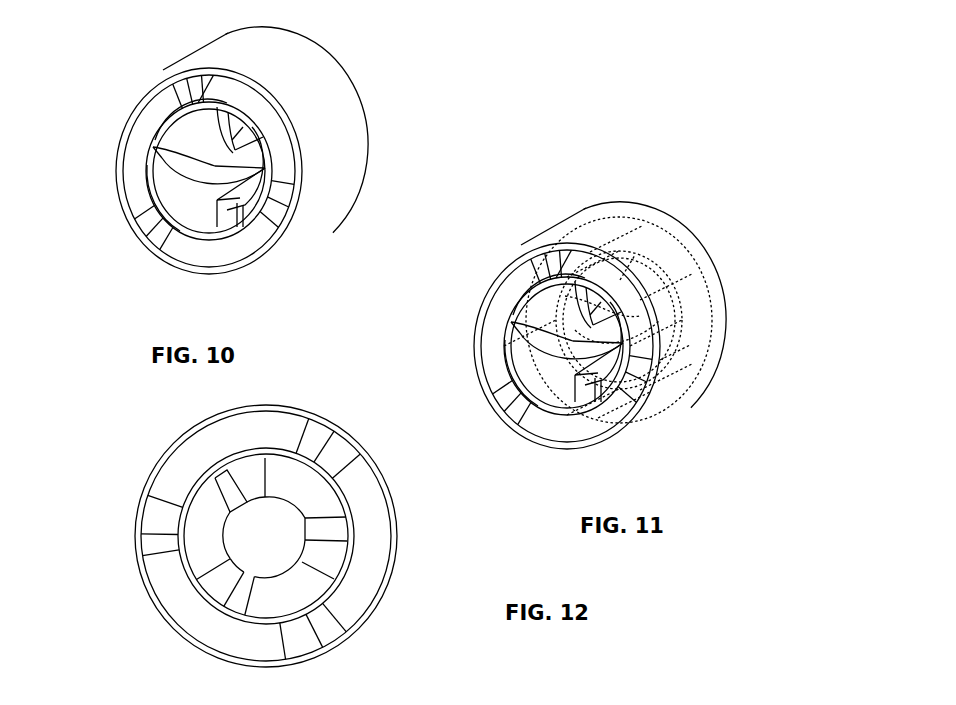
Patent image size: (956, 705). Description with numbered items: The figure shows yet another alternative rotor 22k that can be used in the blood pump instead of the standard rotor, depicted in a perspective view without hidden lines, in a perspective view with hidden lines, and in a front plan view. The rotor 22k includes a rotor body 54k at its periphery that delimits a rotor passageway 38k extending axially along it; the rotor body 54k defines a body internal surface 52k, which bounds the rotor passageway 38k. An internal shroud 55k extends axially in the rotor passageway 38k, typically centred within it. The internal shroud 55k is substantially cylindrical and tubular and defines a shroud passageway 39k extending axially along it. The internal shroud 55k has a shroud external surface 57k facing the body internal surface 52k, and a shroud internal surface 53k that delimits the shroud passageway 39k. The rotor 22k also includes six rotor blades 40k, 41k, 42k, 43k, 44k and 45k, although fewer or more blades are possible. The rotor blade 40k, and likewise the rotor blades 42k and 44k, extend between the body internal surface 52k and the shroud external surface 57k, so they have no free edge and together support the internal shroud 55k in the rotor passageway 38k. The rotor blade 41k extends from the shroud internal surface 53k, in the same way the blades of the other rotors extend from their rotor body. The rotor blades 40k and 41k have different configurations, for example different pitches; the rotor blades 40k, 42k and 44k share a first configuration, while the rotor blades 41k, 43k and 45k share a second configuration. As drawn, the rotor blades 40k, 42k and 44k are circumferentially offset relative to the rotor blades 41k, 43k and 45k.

In FIG. 10, the rotor 22k is at (392, 85).
In FIG. 11, the rotor 22k is at (750, 260).
In FIG. 12, the rotor 22k is at (308, 388).
In FIG. 10, the rotor passageway 38k is at (128, 117).
In FIG. 11, the rotor passageway 38k is at (488, 293).
In FIG. 10, the shroud passageway 39k is at (167, 200).
In FIG. 11, the shroud passageway 39k is at (523, 373).
In FIG. 10, the rotor blade 40k is at (168, 235).
In FIG. 11, the rotor blade 40k is at (520, 398).
In FIG. 12, the rotor blade 40k is at (150, 553).
In FIG. 10, the rotor blade 41k is at (243, 210).
In FIG. 11, the rotor blade 41k is at (602, 388).
In FIG. 12, the rotor blade 41k is at (322, 582).
In FIG. 10, the rotor blade 42k is at (288, 203).
In FIG. 11, the rotor blade 42k is at (648, 380).
In FIG. 12, the rotor blade 42k is at (328, 623).
In FIG. 10, the rotor blade 43k is at (163, 150).
In FIG. 11, the rotor blade 43k is at (543, 333).
In FIG. 12, the rotor blade 43k is at (220, 477).
In FIG. 10, the rotor blade 44k is at (173, 92).
In FIG. 11, the rotor blade 44k is at (535, 262).
In FIG. 12, the rotor blade 44k is at (303, 448).
In FIG. 10, the rotor blade 45k is at (238, 137).
In FIG. 11, the rotor blade 45k is at (598, 315).
In FIG. 12, the rotor blade 45k is at (332, 528).
In FIG. 10, the body internal surface 52k is at (114, 171).
In FIG. 11, the body internal surface 52k is at (477, 350).
In FIG. 12, the body internal surface 52k is at (217, 425).
In FIG. 10, the shroud internal surface 53k is at (174, 206).
In FIG. 11, the shroud internal surface 53k is at (534, 382).
In FIG. 12, the shroud internal surface 53k is at (208, 588).
In FIG. 10, the rotor body 54k is at (347, 163).
In FIG. 11, the rotor body 54k is at (705, 328).
In FIG. 12, the rotor body 54k is at (397, 537).
In FIG. 10, the internal shroud 55k is at (273, 190).
In FIG. 11, the internal shroud 55k is at (632, 365).
In FIG. 12, the internal shroud 55k is at (348, 563).
In FIG. 10, the shroud external surface 57k is at (214, 102).
In FIG. 11, the shroud external surface 57k is at (564, 264).
In FIG. 12, the shroud external surface 57k is at (342, 490).